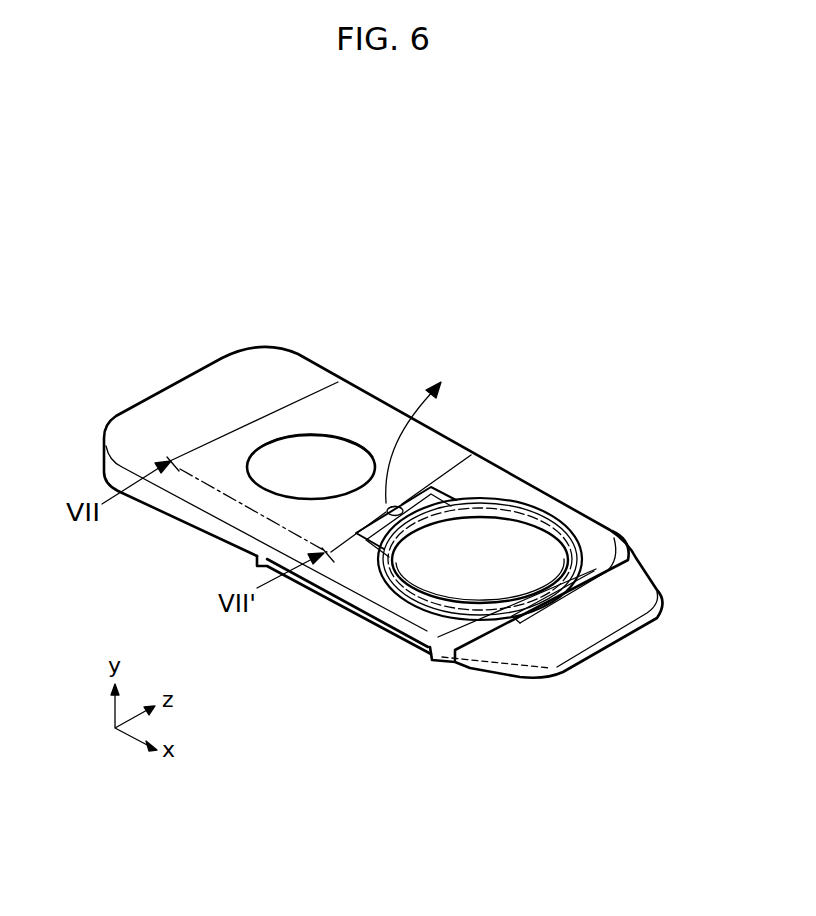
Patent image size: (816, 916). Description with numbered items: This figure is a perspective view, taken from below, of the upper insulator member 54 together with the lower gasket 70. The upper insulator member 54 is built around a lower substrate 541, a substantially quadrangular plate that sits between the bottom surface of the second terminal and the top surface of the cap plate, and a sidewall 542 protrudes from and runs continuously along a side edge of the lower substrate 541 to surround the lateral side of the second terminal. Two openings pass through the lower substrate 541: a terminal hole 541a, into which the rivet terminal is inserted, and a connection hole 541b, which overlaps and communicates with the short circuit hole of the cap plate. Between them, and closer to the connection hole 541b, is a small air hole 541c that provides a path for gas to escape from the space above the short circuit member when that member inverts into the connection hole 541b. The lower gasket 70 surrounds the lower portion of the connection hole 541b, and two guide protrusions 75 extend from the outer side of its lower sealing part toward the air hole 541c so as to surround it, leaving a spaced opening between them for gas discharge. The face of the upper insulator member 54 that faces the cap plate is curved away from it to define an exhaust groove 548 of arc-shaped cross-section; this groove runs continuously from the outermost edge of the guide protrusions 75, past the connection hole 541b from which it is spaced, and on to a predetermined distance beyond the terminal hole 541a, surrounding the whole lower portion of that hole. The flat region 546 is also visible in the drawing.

The upper insulator member 54 is at (383, 460).
The lower substrate 541 is at (193, 397).
The terminal hole 541a is at (313, 430).
The connection hole 541b is at (489, 512).
The air hole 541c is at (399, 503).
The sidewall 542 is at (213, 528).
The flat portion 546 is at (572, 627).
The exhaust groove 548 is at (363, 404).
The lower gasket 70 is at (562, 526).
The guide protrusion 75 is at (386, 507).